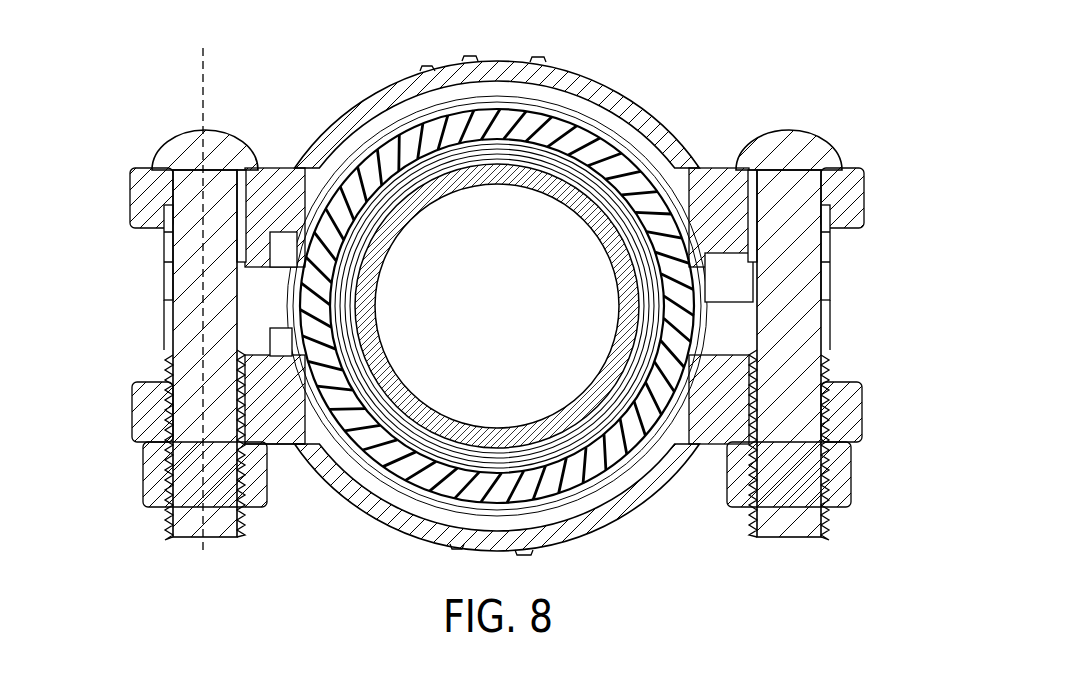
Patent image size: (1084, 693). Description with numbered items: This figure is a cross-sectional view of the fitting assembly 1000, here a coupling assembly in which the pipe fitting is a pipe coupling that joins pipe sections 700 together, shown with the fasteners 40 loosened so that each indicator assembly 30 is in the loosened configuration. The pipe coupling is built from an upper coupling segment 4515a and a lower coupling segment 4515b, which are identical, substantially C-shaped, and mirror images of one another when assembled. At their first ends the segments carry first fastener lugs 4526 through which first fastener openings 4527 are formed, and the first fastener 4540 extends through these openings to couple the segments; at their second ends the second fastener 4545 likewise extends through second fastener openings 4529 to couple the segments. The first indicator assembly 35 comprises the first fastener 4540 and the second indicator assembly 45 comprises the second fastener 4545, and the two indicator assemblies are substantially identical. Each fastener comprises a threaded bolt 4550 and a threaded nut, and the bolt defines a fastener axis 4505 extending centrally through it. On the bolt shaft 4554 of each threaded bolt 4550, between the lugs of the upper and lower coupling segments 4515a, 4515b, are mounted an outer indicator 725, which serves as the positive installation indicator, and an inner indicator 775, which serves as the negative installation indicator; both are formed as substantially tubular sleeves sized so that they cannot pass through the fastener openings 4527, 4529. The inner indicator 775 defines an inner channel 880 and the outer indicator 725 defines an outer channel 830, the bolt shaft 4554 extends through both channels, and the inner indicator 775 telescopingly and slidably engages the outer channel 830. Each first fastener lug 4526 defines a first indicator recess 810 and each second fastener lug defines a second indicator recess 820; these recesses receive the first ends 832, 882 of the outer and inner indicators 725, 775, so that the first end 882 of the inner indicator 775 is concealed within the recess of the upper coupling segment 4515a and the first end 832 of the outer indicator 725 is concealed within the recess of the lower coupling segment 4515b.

The fitting assembly 1000 is at (688, 91).
The upper coupling segment 4515a is at (415, 85).
The lower coupling segment 4515b is at (592, 522).
The pipe section 700 is at (388, 378).
The indicator assembly 30 is at (502, 316).
The first indicator assembly 35 is at (150, 368).
The second indicator assembly 45 is at (858, 292).
The fastener 40 is at (546, 98).
The first fastener 4540 is at (222, 132).
The second fastener 4545 is at (825, 136).
The threaded bolt 4550 is at (178, 142).
The bolt shaft 4554 is at (207, 523).
The fastener axis 4505 is at (203, 48).
The first fastener opening 4527 is at (135, 208).
The second fastener opening 4529 is at (855, 172).
The first indicator recess 810 is at (140, 228).
The second indicator recess 820 is at (848, 222).
The first fastener lug 4526 is at (140, 444).
The inner indicator 775 is at (168, 257).
The outer indicator 725 is at (832, 334).
The inner channel 880 is at (167, 283).
The outer channel 830 is at (830, 351).
The first end of inner indicator 882 is at (243, 202).
The first end of outer indicator 832 is at (270, 460).